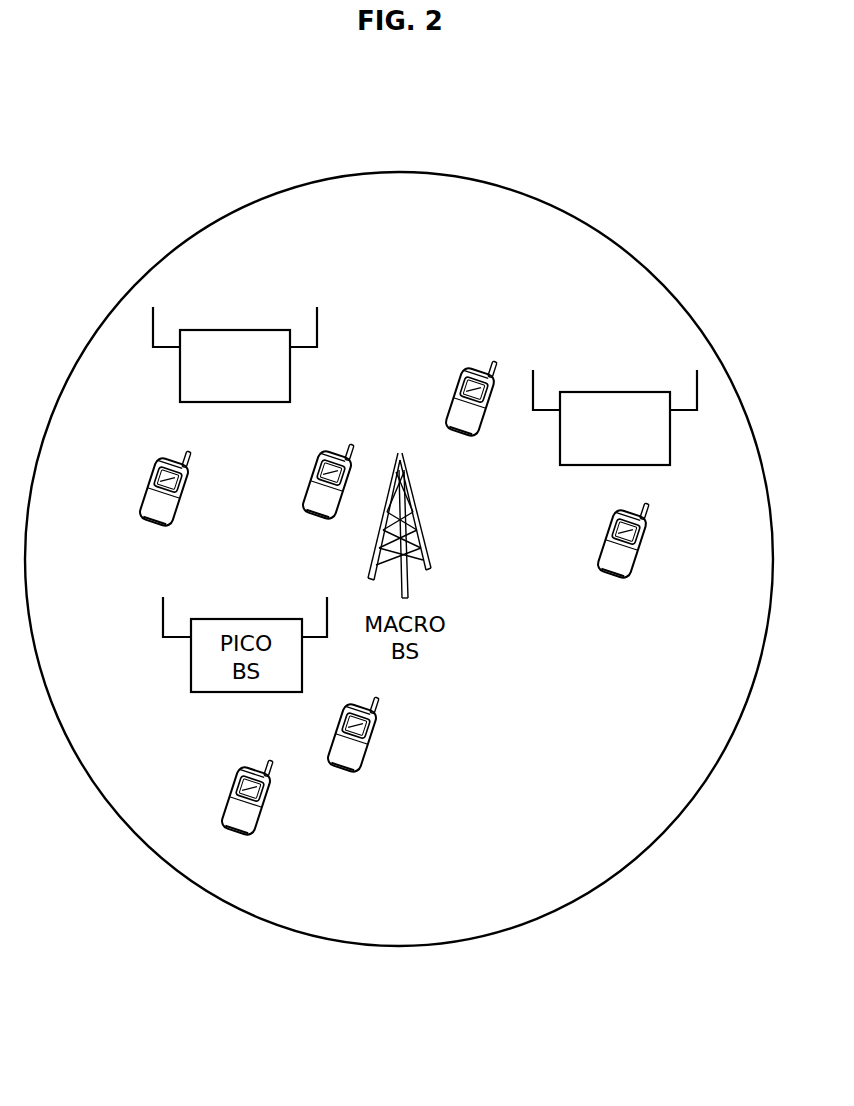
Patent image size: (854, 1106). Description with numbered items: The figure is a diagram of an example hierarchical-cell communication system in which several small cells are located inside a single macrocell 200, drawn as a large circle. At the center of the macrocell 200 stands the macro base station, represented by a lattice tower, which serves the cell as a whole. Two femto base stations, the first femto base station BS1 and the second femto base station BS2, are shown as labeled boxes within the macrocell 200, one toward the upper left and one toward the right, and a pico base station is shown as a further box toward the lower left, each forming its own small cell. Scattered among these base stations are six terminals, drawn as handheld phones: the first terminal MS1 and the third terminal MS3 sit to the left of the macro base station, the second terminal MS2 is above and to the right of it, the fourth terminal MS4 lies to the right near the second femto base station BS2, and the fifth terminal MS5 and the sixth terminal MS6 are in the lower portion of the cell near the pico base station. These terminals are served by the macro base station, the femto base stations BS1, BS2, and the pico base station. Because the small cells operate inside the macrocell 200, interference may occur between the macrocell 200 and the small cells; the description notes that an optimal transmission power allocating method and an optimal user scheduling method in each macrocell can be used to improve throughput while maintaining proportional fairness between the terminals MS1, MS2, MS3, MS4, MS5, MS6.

The macrocell 200 is at (400, 172).
The femto base station 1 BS1 is at (235, 354).
The femto base station 2 BS2 is at (615, 417).
The terminal 1 MS1 is at (329, 496).
The terminal 2 MS2 is at (471, 413).
The terminal 3 MS3 is at (166, 503).
The terminal 4 MS4 is at (624, 556).
The terminal 5 MS5 is at (248, 812).
The terminal 6 MS6 is at (354, 749).